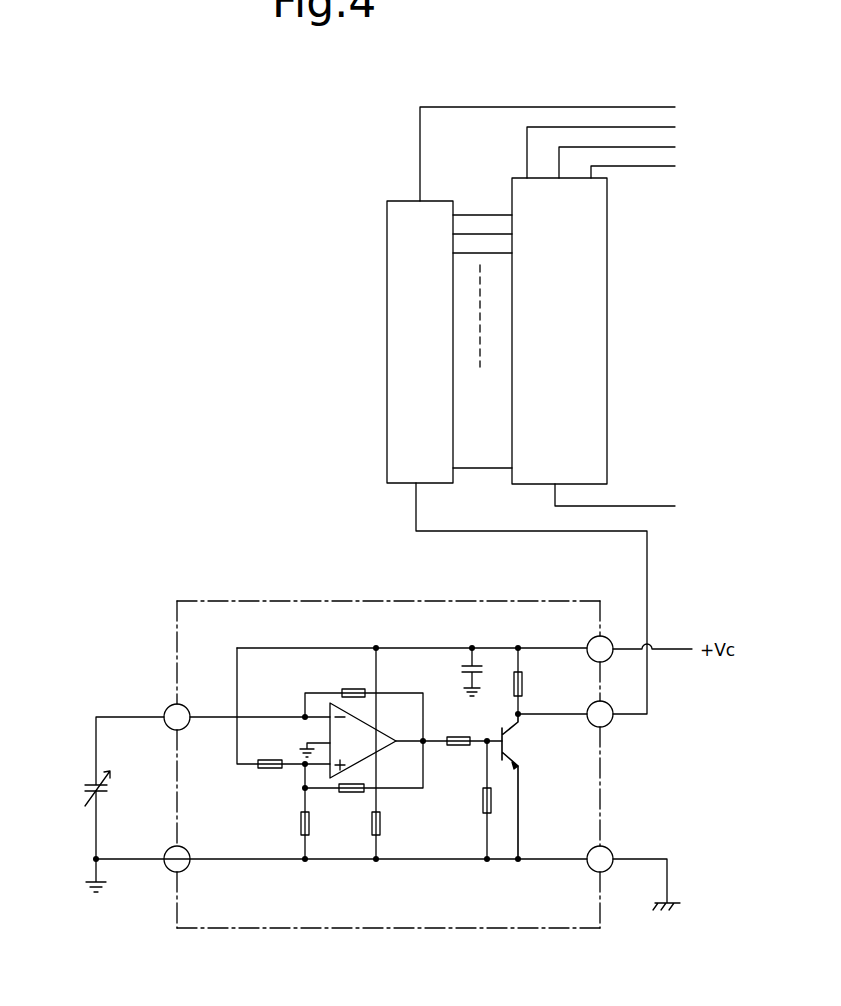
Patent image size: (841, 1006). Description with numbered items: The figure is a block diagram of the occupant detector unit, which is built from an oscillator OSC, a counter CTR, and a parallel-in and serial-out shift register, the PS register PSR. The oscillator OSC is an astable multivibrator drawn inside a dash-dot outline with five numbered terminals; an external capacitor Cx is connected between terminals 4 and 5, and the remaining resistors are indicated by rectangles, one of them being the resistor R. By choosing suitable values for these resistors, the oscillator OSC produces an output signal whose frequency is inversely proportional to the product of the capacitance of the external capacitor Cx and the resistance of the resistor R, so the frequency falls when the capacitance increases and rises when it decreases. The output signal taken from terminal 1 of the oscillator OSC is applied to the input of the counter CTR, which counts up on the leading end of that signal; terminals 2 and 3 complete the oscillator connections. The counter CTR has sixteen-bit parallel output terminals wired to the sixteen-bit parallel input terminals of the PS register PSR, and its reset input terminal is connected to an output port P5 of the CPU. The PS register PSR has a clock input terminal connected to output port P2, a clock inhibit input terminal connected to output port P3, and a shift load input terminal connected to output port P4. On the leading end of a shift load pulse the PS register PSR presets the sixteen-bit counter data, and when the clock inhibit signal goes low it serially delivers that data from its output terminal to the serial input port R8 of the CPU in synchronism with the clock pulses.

The counter CTR is at (387, 412).
The parallel-in and serial-out shift register PSR is at (607, 418).
The oscillator OSC is at (320, 928).
The output port P5 is at (561, 150).
The output port P2 is at (614, 147).
The output port P3 is at (630, 156).
The output port P4 is at (646, 166).
The serial input port R8 is at (628, 500).
The resistor R is at (353, 682).
The external capacitor Cx is at (112, 788).
The terminal 1 is at (600, 714).
The terminal 2 is at (600, 649).
The terminal 3 is at (600, 859).
The terminal 4 is at (177, 717).
The terminal 5 is at (177, 859).